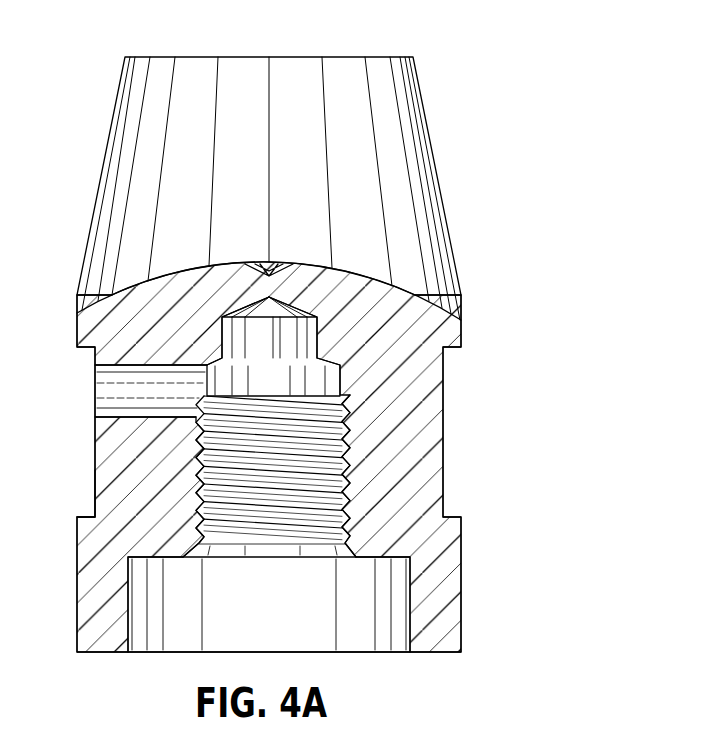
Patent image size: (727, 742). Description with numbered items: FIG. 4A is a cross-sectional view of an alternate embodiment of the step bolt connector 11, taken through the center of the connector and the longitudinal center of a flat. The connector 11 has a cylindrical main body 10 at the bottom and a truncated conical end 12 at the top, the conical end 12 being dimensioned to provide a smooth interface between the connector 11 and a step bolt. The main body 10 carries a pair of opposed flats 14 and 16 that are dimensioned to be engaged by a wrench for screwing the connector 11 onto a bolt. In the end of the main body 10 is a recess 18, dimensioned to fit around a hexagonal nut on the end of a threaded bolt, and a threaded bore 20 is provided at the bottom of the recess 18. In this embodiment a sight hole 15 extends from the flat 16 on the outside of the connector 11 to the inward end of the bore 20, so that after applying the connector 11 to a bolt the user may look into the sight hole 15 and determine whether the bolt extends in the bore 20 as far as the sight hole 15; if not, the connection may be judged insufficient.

The cylindrical main body 10 is at (397, 323).
The step bolt connector 11 is at (541, 185).
The truncated conical end 12 is at (407, 157).
The flat 14 is at (443, 488).
The sight hole 15 is at (113, 391).
The flat 16 is at (95, 480).
The recess 18 is at (462, 588).
The threaded bore 20 is at (345, 392).